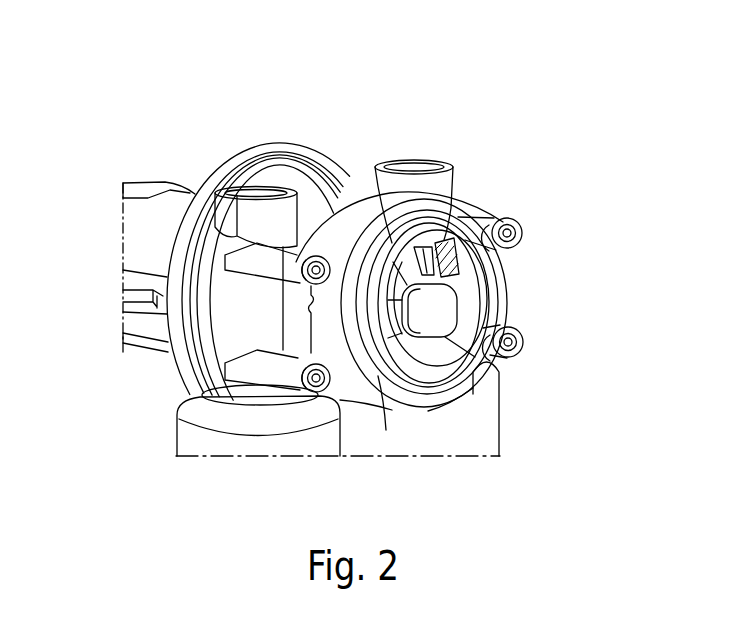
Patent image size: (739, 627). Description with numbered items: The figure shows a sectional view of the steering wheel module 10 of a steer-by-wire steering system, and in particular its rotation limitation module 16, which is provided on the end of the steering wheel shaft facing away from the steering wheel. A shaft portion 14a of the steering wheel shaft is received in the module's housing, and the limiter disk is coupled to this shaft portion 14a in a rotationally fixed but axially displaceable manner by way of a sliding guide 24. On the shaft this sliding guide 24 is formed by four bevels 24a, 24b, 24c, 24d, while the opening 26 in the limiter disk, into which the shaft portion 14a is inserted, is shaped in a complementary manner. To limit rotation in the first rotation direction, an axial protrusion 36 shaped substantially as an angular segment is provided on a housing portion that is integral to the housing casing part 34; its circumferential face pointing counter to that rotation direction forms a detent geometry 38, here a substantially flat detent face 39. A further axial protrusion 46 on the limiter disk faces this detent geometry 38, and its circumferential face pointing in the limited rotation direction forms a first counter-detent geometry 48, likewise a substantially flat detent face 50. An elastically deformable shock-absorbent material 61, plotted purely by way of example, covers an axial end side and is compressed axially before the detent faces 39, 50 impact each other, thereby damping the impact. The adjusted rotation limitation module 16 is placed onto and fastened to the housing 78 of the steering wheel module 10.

The steering wheel module 10 is at (508, 110).
The shaft portion 14a is at (437, 310).
The rotation limitation module 16 is at (570, 292).
The sliding guide 24 is at (458, 288).
The bevel 24a is at (391, 227).
The bevel 24b is at (423, 243).
The bevel 24c is at (447, 338).
The bevel 24d is at (428, 340).
The opening 26 is at (387, 337).
The housing casing part 34 is at (352, 213).
The axial protrusion 36 is at (455, 236).
The detent geometry 38 is at (503, 217).
The detent face 39 is at (412, 305).
The axial protrusion 46 is at (425, 160).
The first counter-detent geometry 48 is at (400, 243).
The detent face 50 is at (256, 193).
The shock-absorbent material 61 is at (388, 300).
The housing 78 is at (236, 286).